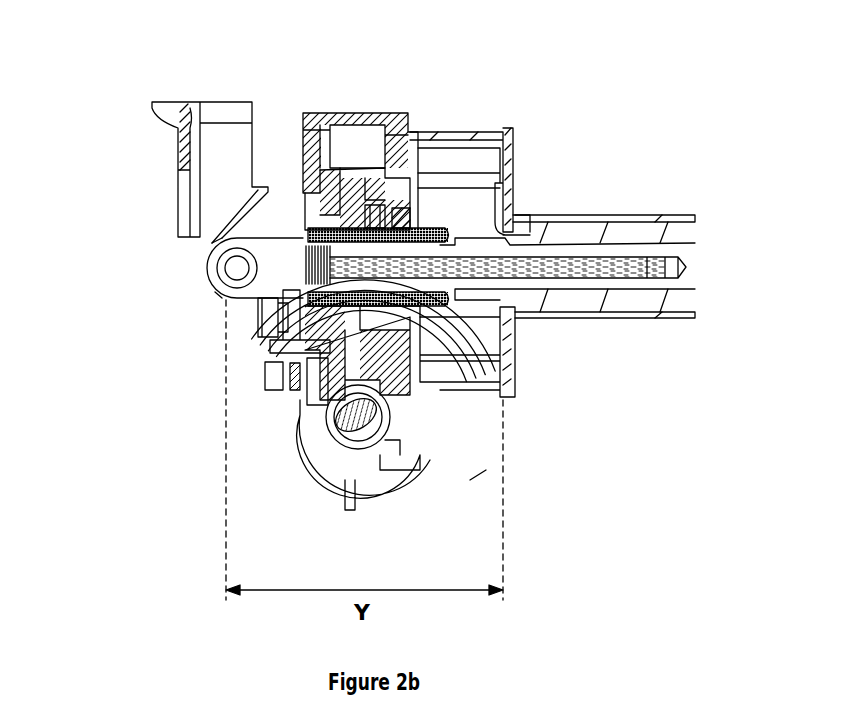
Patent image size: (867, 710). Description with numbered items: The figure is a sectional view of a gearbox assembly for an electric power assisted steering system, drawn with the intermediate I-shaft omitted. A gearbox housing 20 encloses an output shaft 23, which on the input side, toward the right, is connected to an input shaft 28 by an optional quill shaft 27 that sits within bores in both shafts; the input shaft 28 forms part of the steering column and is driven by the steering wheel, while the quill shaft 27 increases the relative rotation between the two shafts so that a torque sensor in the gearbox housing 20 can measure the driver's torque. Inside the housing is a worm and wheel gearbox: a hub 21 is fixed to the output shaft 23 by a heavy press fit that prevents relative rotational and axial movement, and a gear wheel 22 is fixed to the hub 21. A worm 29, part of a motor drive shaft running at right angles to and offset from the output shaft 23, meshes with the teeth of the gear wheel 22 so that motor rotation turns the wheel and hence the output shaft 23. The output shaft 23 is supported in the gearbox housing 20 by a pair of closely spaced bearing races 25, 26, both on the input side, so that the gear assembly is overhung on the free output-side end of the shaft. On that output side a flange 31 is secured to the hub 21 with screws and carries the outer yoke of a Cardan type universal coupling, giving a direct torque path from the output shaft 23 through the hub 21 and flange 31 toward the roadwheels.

The gearbox housing 20 is at (350, 113).
The hub 21 is at (290, 337).
The gear wheel 22 is at (358, 147).
The output shaft 23 is at (373, 293).
The bearing race 25 is at (376, 213).
The bearing race 26 is at (410, 210).
The quill shaft 27 is at (548, 258).
The input shaft 28 is at (596, 240).
The worm 29 is at (370, 430).
The flange 31 is at (268, 315).